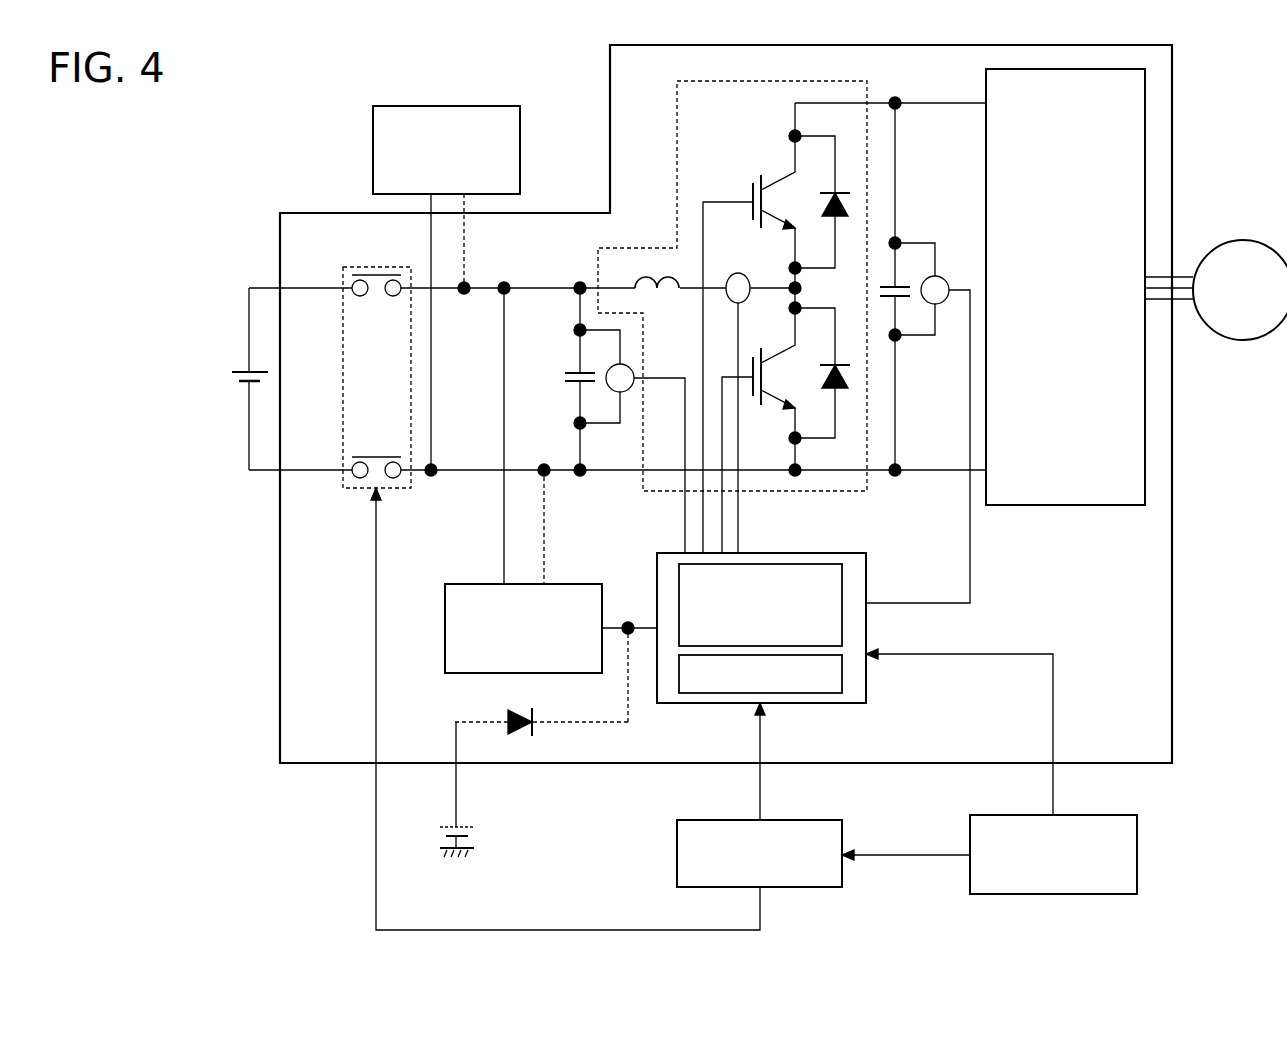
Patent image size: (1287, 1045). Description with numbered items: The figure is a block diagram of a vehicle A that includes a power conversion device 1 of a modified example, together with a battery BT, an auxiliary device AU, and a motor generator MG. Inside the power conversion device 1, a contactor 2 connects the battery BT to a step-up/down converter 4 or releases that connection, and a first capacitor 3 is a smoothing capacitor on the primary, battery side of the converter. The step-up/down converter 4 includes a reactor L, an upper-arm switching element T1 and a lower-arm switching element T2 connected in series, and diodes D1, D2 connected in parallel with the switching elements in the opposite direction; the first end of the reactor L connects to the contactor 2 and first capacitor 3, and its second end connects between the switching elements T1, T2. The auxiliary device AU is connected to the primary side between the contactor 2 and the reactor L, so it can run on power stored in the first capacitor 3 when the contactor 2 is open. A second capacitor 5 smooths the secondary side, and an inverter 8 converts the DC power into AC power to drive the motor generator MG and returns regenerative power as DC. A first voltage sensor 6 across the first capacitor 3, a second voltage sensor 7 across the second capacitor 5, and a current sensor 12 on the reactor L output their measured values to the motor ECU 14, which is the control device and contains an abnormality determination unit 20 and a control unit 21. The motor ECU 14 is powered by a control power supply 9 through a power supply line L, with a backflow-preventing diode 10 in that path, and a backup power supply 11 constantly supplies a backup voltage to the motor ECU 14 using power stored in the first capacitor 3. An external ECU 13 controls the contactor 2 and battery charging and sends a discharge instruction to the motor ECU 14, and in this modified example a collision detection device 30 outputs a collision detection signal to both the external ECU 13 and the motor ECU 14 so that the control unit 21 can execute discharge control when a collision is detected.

The power conversion device 1 is at (280, 244).
The contactor 2 is at (343, 268).
The first capacitor 3 is at (573, 372).
The step-up/down converter 4 is at (677, 125).
The second capacitor 5 is at (905, 302).
The first voltage sensor 6 is at (626, 396).
The second voltage sensor 7 is at (950, 280).
The inverter 8 is at (1068, 506).
The control power supply 9 is at (449, 826).
The diode 10 is at (508, 714).
The backup power supply 11 is at (474, 585).
The current sensor 12 is at (738, 273).
The external ECU 13 is at (845, 873).
The motor ECU 14 is at (866, 677).
The abnormality determination unit 20 is at (805, 564).
The control unit 21 is at (811, 695).
The collision detection device 30 is at (1092, 815).
The vehicle A is at (1232, 118).
The auxiliary device AU is at (373, 150).
The battery BT is at (246, 368).
The motor generator MG is at (1247, 240).
The reactor L is at (656, 300).
The switching element T1 is at (750, 190).
The switching element T2 is at (755, 365).
The diode D1 is at (843, 192).
The diode D2 is at (843, 363).